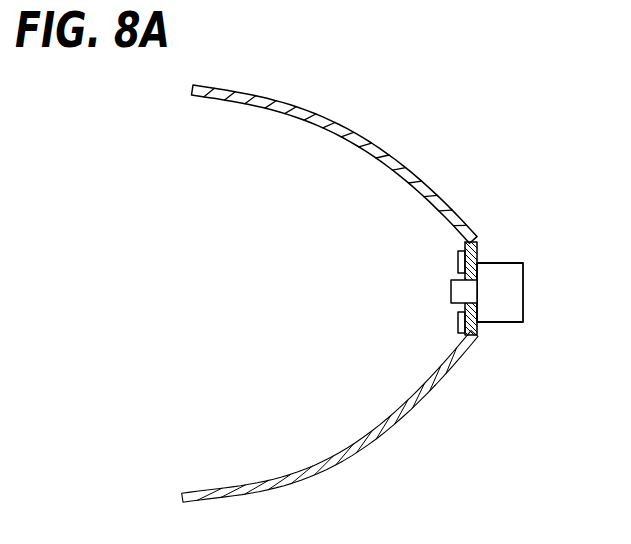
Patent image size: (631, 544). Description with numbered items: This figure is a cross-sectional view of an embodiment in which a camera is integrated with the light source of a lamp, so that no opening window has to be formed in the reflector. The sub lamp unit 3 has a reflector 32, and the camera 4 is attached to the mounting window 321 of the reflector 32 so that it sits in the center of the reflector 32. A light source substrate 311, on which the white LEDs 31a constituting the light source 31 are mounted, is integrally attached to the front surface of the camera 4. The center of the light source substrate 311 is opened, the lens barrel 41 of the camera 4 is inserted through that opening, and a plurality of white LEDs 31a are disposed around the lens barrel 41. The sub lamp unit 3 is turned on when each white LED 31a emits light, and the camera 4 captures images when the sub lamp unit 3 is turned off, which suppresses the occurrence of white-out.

The sub lamp unit 3 is at (363, 290).
The light source 31 is at (460, 249).
The light source substrate 311 is at (478, 260).
The white LED 31a is at (458, 256).
The reflector 32 is at (401, 153).
The mounting window 321 is at (478, 336).
The camera 4 is at (476, 306).
The lens barrel 41 is at (458, 292).